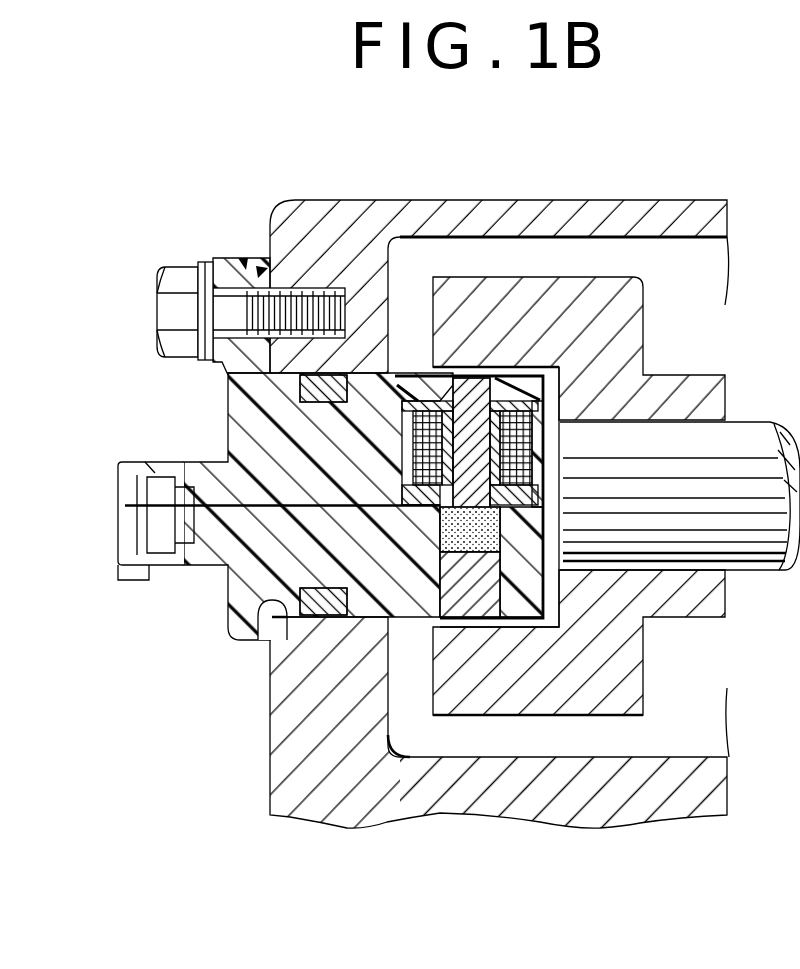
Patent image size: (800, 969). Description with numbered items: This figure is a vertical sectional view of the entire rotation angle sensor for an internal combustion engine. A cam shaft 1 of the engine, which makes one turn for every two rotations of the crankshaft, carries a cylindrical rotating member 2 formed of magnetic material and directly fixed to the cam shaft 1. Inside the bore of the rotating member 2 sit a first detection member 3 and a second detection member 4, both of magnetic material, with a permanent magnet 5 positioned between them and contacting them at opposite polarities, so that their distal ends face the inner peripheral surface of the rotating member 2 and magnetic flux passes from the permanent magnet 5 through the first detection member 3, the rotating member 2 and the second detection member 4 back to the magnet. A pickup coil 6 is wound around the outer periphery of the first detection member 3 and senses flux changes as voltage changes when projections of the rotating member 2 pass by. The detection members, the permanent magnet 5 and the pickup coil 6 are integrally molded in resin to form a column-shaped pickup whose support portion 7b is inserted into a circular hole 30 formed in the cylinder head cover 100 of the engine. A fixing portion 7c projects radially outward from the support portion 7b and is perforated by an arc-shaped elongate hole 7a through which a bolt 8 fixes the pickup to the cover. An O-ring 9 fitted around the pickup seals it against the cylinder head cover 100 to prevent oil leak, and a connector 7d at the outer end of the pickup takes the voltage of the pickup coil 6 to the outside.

The cylinder head cover 100 is at (598, 207).
The cam shaft 1 is at (752, 440).
The rotating member 2 is at (628, 330).
The first detection member 3 is at (468, 400).
The second detection member 4 is at (472, 607).
The permanent magnet 5 is at (432, 533).
The pickup coil 6 is at (410, 445).
The elongate hole 7a is at (257, 262).
The support portion 7b is at (372, 382).
The fixing portion 7c is at (225, 258).
The connector 7d is at (190, 470).
The bolt 8 is at (157, 310).
The O-ring 9 is at (342, 380).
The hole 30 is at (255, 640).